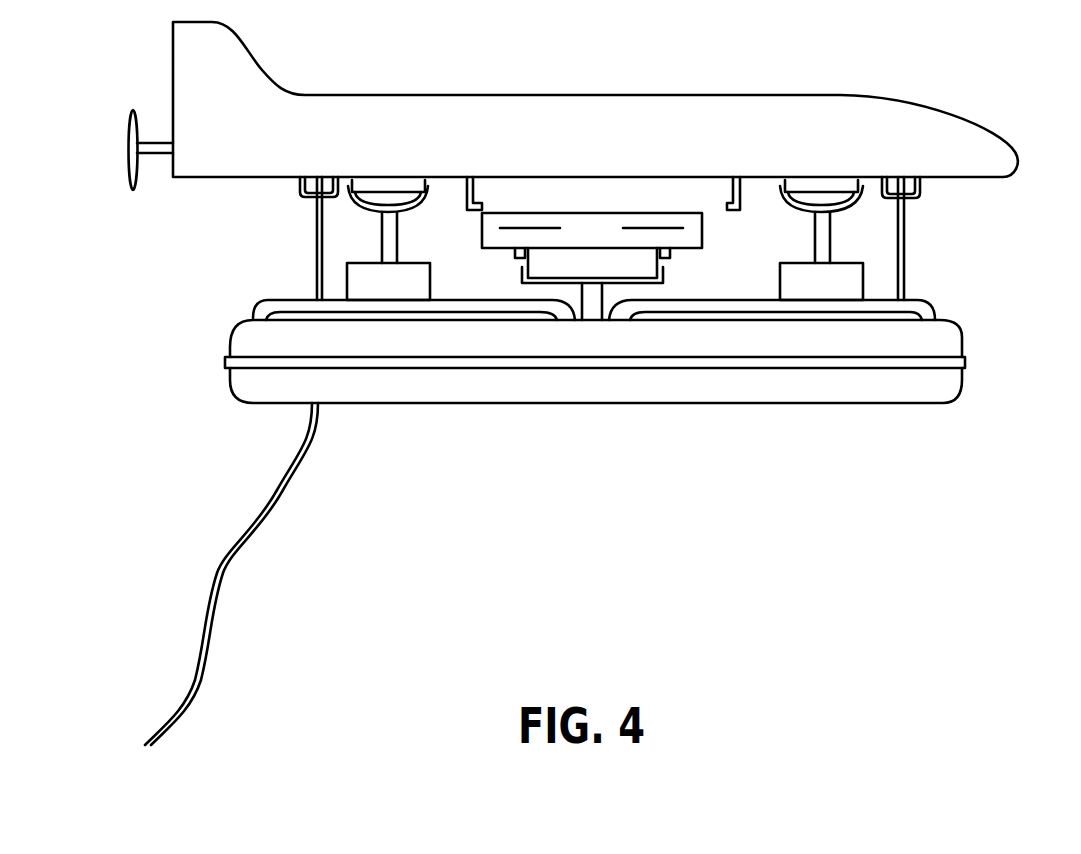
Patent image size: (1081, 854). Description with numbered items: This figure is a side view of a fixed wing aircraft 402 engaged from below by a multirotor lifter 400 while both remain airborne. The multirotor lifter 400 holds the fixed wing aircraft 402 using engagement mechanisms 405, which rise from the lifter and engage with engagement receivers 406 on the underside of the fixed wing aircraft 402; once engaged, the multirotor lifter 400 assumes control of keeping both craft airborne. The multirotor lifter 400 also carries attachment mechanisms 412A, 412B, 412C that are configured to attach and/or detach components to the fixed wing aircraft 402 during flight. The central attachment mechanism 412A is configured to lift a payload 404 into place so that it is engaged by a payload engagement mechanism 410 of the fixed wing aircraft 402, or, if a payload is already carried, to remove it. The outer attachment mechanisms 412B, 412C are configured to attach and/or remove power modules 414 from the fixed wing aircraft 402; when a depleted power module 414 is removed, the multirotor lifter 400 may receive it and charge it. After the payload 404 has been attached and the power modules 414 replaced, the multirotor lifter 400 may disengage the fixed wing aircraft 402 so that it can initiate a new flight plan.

The multirotor lifter 400 is at (950, 380).
The fixed wing aircraft 402 is at (983, 142).
The payload 404 is at (627, 267).
The engagement mechanism 405 is at (315, 242).
The engagement receiver 406 is at (298, 192).
The payload engagement mechanism 410 is at (740, 192).
The attachment mechanism 412A is at (592, 313).
The attachment mechanism 412B is at (392, 283).
The attachment mechanism 412C is at (815, 285).
The power module 414 is at (392, 183).